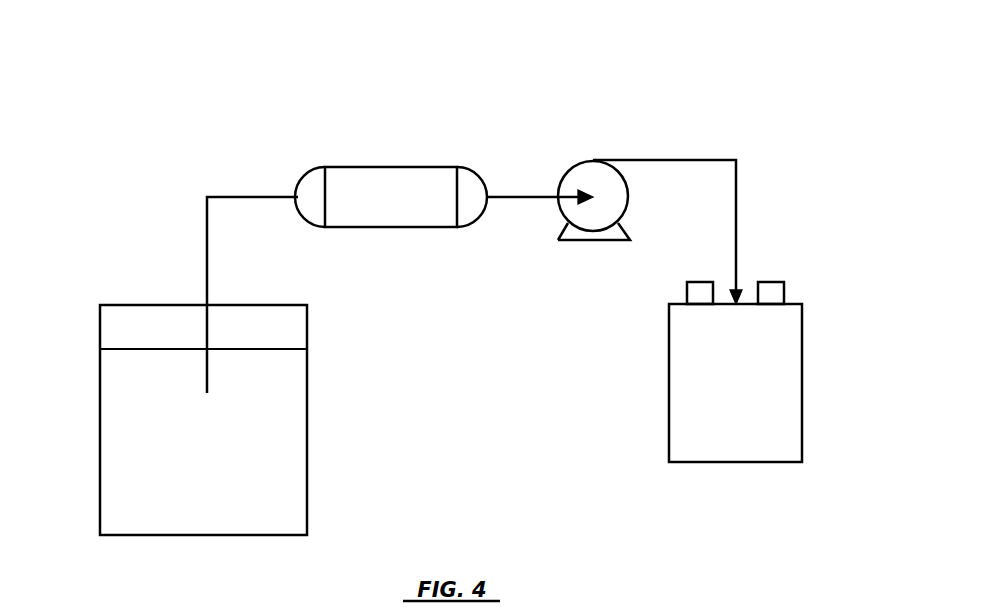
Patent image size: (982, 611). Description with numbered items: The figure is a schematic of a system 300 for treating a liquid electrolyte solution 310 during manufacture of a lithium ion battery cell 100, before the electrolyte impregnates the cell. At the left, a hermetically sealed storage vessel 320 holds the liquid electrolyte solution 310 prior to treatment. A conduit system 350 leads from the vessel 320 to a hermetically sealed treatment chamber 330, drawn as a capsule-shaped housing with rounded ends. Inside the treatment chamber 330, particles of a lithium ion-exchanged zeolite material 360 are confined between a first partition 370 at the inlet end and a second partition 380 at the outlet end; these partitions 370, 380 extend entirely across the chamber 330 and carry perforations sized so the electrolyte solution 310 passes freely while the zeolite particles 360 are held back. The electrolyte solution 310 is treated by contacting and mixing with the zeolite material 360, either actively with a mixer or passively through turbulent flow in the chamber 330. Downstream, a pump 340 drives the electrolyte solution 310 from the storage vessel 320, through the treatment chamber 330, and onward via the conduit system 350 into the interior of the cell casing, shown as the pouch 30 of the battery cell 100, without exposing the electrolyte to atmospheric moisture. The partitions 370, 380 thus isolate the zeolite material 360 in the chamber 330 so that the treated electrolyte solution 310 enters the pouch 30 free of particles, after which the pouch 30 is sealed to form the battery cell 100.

The system 300 is at (146, 202).
The storage vessel 320 is at (100, 428).
The liquid electrolyte solution 310 is at (187, 468).
The first partition 370 is at (325, 195).
The treatment chamber 330 is at (392, 167).
The lithium ion-exchanged zeolite material 360 is at (403, 212).
The second partition 380 is at (458, 195).
The pump 340 is at (592, 161).
The conduit system 350 is at (713, 159).
The lithium ion battery cell 100 is at (788, 369).
The pouch 30 is at (803, 393).